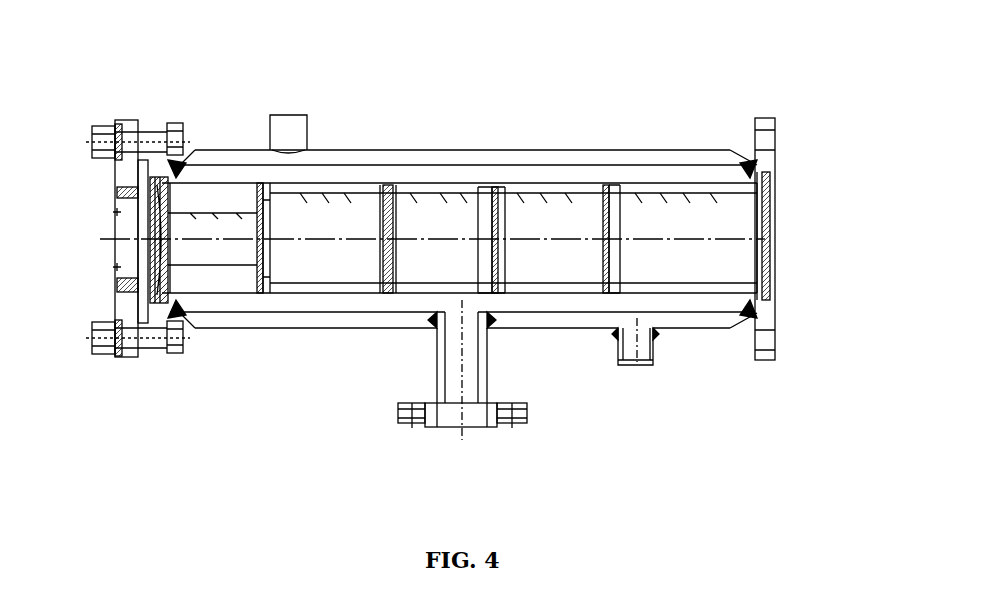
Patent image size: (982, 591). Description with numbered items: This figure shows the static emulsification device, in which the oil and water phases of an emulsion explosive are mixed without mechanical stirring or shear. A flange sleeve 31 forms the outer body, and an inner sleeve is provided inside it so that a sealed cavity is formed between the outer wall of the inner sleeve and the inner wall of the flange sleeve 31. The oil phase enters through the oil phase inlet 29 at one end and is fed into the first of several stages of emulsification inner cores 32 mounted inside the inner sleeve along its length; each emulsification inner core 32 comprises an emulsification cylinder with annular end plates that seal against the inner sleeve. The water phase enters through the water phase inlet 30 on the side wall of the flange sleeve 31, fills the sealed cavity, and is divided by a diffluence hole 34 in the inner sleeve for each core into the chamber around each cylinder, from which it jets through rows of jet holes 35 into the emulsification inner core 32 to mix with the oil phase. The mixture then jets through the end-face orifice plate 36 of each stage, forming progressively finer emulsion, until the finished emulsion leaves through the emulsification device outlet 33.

The oil phase inlet 29 is at (170, 167).
The water phase inlet 30 is at (462, 427).
The flange sleeve 31 is at (413, 150).
The emulsification inner core 32 is at (558, 240).
The emulsification device outlet 33 is at (772, 238).
The diffluence hole 34 is at (658, 182).
The jet hole 35 is at (193, 213).
The orifice plate 36 is at (257, 263).